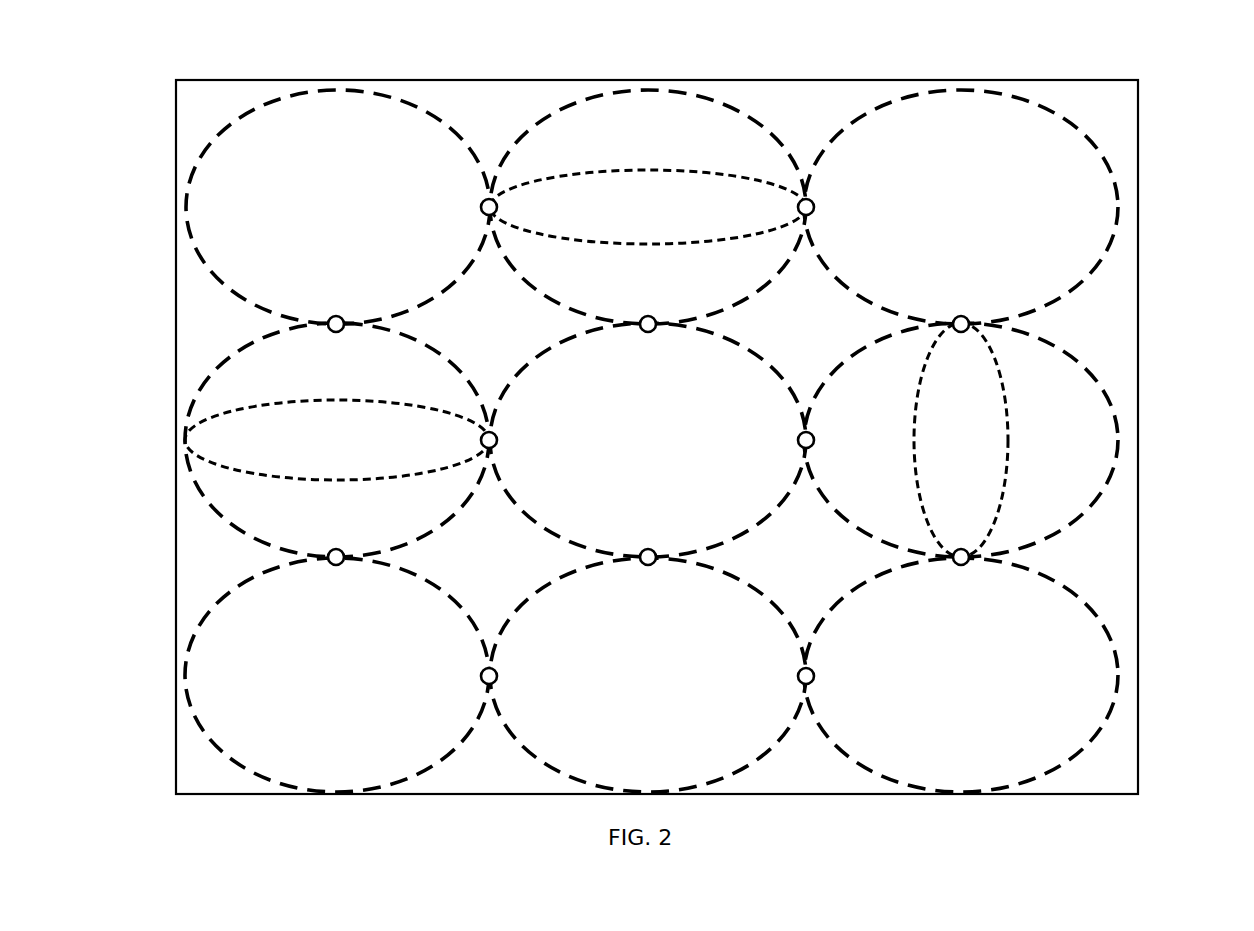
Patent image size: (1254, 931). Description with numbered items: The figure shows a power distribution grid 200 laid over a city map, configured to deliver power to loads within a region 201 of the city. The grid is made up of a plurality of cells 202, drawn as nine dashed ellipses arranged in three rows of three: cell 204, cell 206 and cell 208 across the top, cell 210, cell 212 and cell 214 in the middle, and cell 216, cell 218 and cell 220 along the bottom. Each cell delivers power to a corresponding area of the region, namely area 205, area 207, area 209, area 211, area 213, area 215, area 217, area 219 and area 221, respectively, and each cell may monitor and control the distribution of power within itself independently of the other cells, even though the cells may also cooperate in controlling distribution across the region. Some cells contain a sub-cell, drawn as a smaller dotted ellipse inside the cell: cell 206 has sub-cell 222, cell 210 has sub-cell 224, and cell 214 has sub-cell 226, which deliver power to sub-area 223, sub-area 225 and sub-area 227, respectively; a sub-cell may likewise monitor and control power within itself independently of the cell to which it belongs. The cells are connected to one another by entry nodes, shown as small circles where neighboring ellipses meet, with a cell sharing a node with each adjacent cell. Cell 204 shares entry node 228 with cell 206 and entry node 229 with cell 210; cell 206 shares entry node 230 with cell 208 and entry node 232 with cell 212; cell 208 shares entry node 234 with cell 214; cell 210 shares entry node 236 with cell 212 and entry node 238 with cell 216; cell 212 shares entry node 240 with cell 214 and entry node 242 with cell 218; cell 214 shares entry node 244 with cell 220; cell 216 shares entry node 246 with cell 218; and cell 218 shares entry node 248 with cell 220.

The power distribution grid 200 is at (1176, 94).
The region 201 is at (231, 101).
The plurality of cells 202 is at (764, 101).
The cell 204 is at (190, 165).
The area 205 is at (357, 221).
The cell 206 is at (568, 103).
The area 207 is at (667, 142).
The cell 208 is at (1120, 220).
The area 209 is at (980, 221).
The cell 210 is at (191, 472).
The area 211 is at (356, 386).
The cell 212 is at (546, 350).
The area 213 is at (667, 453).
The cell 214 is at (1120, 428).
The area 215 is at (879, 453).
The cell 216 is at (188, 684).
The area 217 is at (356, 688).
The cell 218 is at (520, 755).
The area 219 is at (667, 688).
The cell 220 is at (1120, 690).
The area 221 is at (980, 688).
The sub-cell 222 is at (594, 172).
The sub-area 223 is at (667, 219).
The sub-cell 224 is at (287, 401).
The sub-area 225 is at (356, 453).
The sub-cell 226 is at (1006, 466).
The sub-area 227 is at (980, 453).
The entry node 228 is at (481, 205).
The entry node 229 is at (336, 316).
The entry node 230 is at (814, 206).
The entry node 232 is at (648, 316).
The entry node 234 is at (961, 316).
The entry node 236 is at (497, 440).
The entry node 238 is at (336, 565).
The entry node 240 is at (798, 440).
The entry node 242 is at (648, 565).
The entry node 244 is at (961, 565).
The entry node 246 is at (481, 676).
The entry node 248 is at (798, 676).